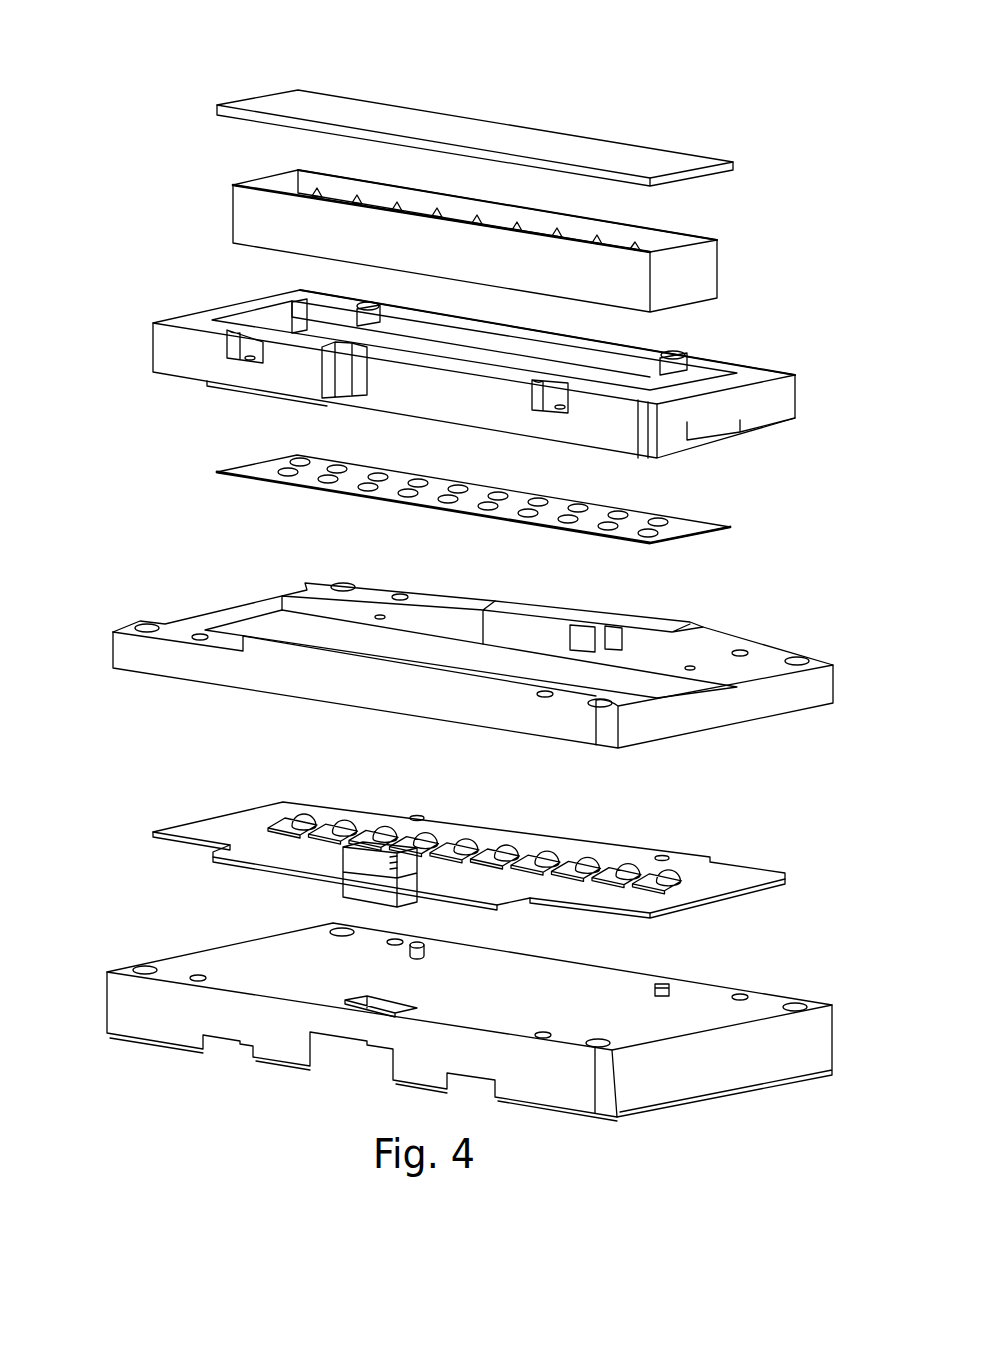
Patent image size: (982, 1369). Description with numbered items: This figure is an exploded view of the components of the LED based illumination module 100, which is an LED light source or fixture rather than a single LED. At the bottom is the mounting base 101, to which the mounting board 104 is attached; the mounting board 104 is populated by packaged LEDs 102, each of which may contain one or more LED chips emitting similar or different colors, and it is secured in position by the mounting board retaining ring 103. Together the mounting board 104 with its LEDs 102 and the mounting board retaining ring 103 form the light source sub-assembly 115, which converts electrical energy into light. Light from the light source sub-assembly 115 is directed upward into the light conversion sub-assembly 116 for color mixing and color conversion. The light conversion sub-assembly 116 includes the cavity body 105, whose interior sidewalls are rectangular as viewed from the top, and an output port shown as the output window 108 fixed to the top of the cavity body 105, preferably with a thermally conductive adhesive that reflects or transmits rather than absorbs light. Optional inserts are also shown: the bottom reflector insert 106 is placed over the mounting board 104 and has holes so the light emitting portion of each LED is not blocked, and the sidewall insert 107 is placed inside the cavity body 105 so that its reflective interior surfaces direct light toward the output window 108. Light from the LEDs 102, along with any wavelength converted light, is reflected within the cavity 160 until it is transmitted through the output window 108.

The LED based illumination module 100 is at (645, 89).
The mounting base 101 is at (763, 1003).
The LEDs 102 is at (277, 823).
The mounting board retaining ring 103 is at (772, 657).
The mounting board 104 is at (737, 877).
The cavity body 105 is at (750, 373).
The bottom reflector insert 106 is at (690, 528).
The sidewall insert 107 is at (507, 241).
The output window 108 is at (532, 137).
The light source sub-assembly 115 is at (86, 568).
The light conversion sub-assembly 116 is at (88, 69).
The cavity 160 is at (665, 234).